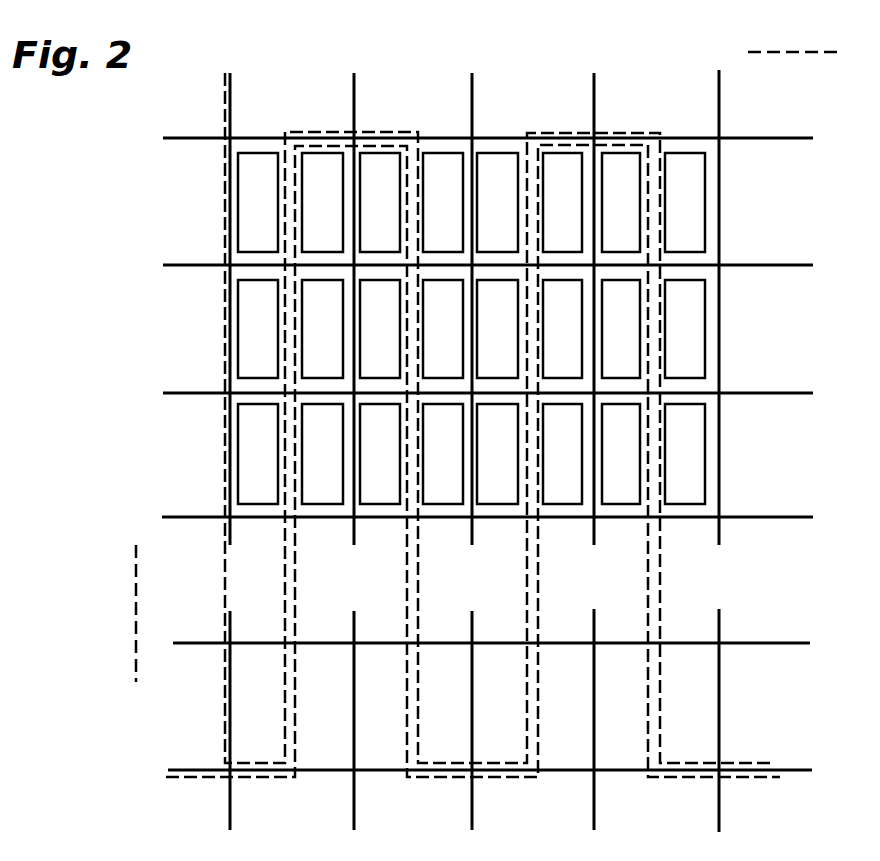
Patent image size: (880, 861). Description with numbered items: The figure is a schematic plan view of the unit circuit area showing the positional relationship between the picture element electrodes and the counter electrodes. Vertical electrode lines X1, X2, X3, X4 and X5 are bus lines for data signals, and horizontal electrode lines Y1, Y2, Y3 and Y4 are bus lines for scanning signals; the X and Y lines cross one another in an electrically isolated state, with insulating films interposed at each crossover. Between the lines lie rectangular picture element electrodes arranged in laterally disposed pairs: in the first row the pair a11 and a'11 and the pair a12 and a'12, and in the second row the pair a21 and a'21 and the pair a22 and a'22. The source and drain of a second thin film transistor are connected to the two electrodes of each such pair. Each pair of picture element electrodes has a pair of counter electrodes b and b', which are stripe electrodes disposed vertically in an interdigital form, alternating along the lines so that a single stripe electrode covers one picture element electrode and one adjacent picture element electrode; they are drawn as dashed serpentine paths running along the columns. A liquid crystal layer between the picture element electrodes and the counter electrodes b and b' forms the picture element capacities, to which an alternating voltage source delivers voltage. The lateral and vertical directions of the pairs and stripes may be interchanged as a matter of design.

The electrode line X1 is at (230, 434).
The electrode line X2 is at (352, 434).
The electrode line X3 is at (470, 434).
The electrode line X4 is at (584, 434).
The electrode line X5 is at (703, 435).
The electrode line Y1 is at (465, 132).
The electrode line Y2 is at (466, 262).
The electrode line Y3 is at (466, 388).
The electrode line Y4 is at (466, 512).
The picture element electrode a11 is at (258, 202).
The picture element electrode a'11 is at (323, 202).
The picture element electrode a12 is at (380, 202).
The picture element electrode a'12 is at (443, 202).
The picture element electrode a21 is at (258, 329).
The picture element electrode a'21 is at (323, 329).
The picture element electrode a22 is at (380, 329).
The picture element electrode a'22 is at (443, 329).
The counter electrode b is at (497, 448).
The counter electrode b' is at (473, 448).